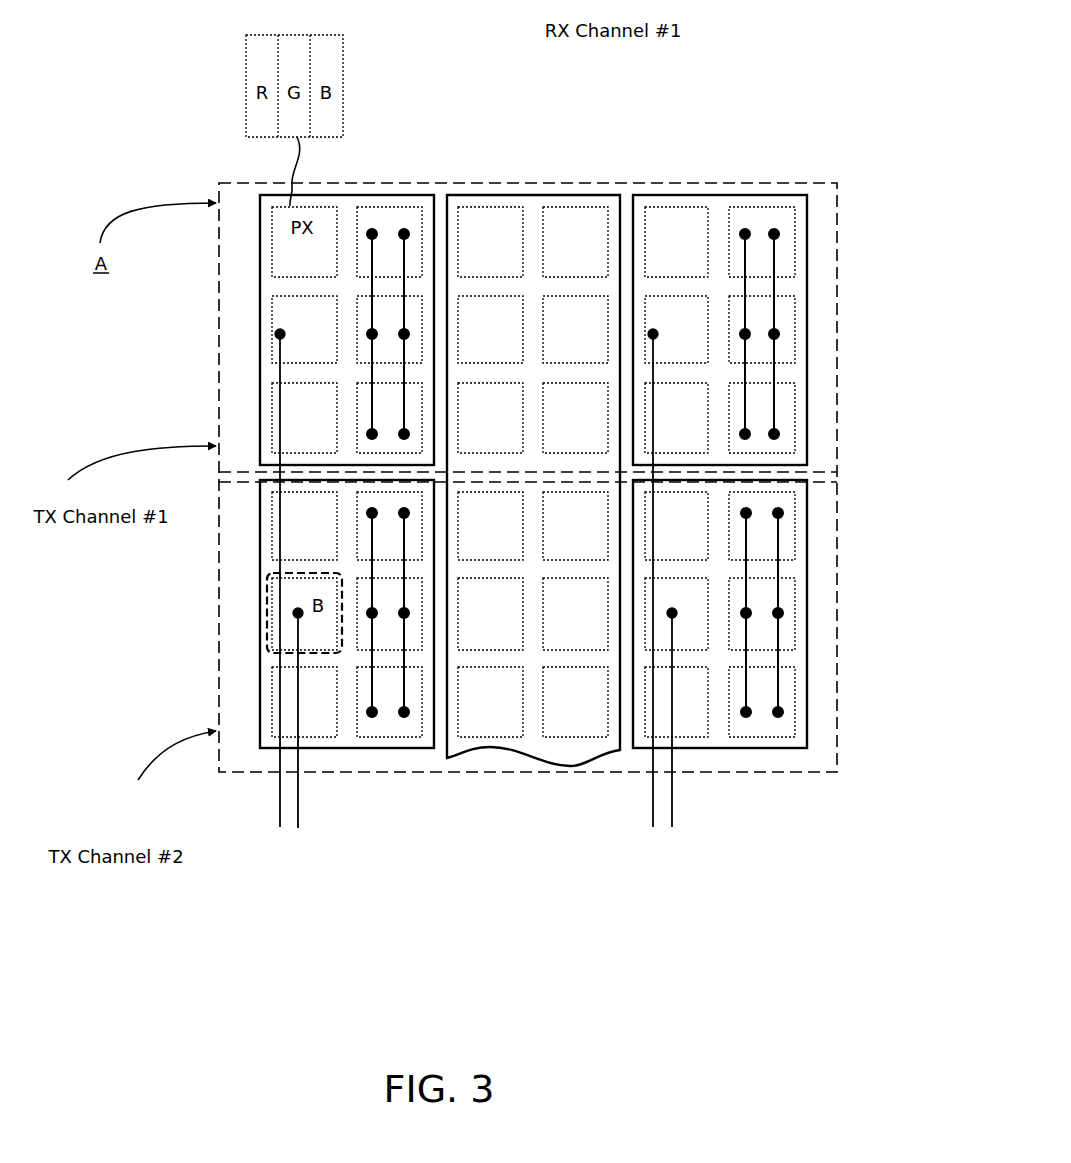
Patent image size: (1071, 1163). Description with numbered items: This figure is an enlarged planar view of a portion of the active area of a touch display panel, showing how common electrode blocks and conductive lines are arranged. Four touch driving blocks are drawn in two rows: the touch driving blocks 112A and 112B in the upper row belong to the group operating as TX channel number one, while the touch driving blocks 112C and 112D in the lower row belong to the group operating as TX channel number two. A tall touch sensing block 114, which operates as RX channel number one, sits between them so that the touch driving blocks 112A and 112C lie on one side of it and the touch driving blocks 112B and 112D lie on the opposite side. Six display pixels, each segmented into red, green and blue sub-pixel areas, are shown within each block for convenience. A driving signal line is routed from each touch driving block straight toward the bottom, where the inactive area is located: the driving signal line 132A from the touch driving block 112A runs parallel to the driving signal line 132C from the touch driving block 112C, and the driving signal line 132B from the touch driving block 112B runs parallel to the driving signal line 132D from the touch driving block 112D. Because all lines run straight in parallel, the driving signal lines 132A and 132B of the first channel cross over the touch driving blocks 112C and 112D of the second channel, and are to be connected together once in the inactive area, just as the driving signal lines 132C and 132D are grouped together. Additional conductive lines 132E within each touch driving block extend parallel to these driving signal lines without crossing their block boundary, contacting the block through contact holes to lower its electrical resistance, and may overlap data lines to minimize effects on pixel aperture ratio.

The touch driving block 112A is at (256, 294).
The touch driving block 112B is at (810, 318).
The touch driving block 112C is at (256, 536).
The touch driving block 112D is at (810, 568).
The touch sensing block 114 is at (538, 210).
The driving signal line 132A is at (275, 818).
The driving signal line 132B is at (648, 780).
The driving signal line 132C is at (308, 806).
The driving signal line 132D is at (678, 812).
The conductive lines 132E is at (762, 228).